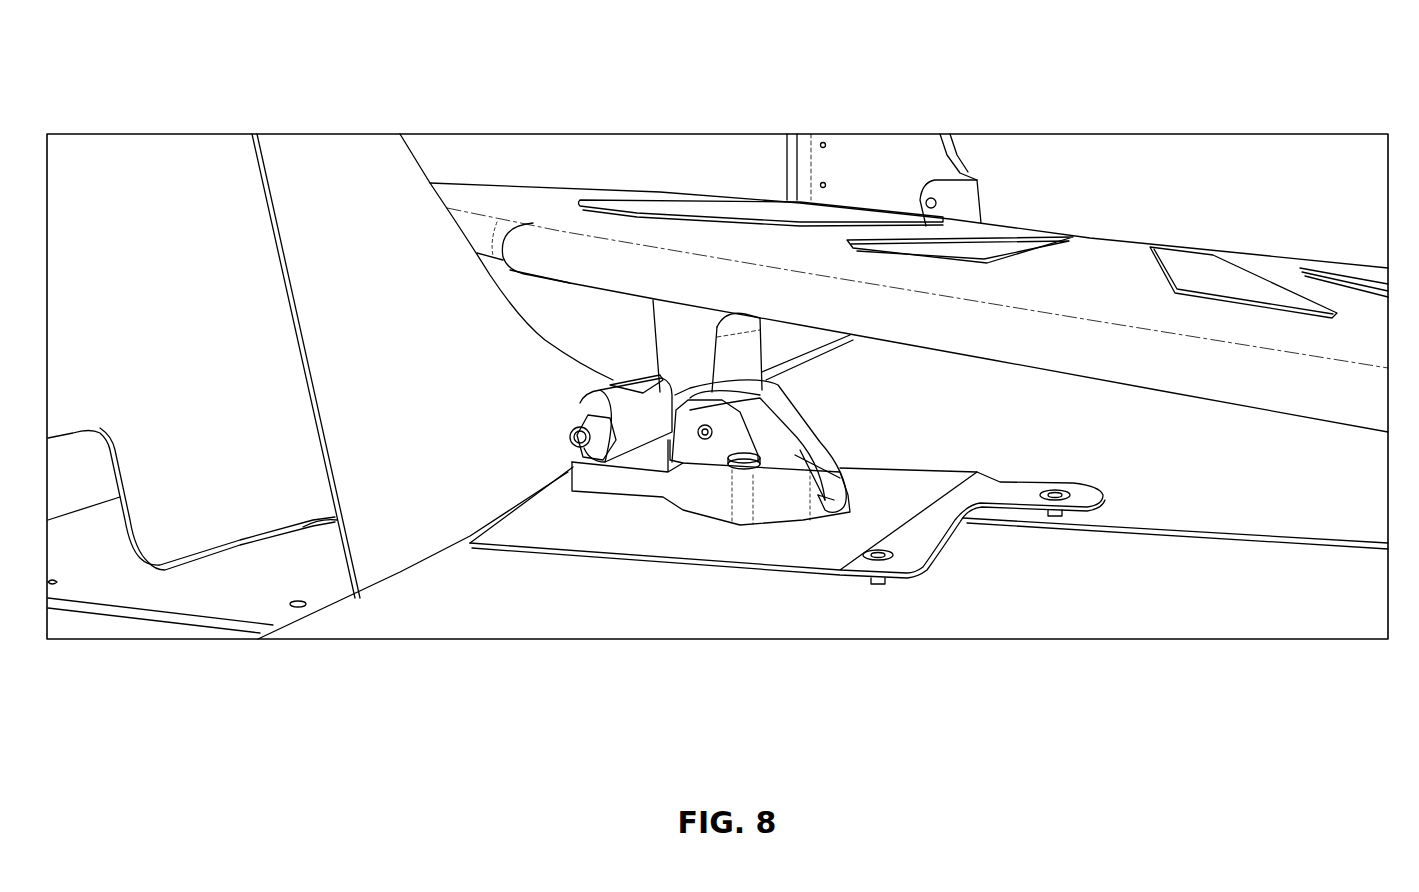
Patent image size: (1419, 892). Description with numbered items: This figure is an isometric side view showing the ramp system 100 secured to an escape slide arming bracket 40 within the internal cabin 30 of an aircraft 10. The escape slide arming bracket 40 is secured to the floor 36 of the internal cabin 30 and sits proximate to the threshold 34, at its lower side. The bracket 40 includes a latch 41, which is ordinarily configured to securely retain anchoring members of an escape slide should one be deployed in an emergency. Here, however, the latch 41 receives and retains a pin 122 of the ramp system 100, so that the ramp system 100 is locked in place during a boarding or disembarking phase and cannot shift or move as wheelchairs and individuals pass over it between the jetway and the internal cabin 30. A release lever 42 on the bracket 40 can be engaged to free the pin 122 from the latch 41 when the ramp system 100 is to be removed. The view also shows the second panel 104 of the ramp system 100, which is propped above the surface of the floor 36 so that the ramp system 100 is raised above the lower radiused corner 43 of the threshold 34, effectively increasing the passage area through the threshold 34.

The aircraft 10 is at (228, 651).
The internal cabin 30 is at (550, 647).
The threshold 34 is at (424, 152).
The floor 36 is at (973, 607).
The escape slide arming bracket 40 is at (650, 478).
The latch 41 is at (645, 372).
The release lever 42 is at (847, 443).
The lower radiused corner 43 is at (593, 370).
The ramp system 100 is at (1080, 214).
The second panel 104 is at (1098, 260).
The pin 122 is at (577, 443).